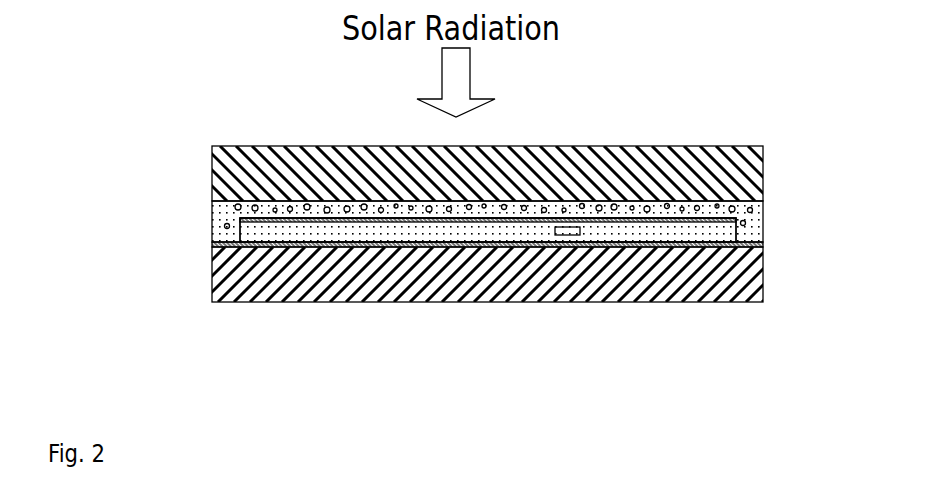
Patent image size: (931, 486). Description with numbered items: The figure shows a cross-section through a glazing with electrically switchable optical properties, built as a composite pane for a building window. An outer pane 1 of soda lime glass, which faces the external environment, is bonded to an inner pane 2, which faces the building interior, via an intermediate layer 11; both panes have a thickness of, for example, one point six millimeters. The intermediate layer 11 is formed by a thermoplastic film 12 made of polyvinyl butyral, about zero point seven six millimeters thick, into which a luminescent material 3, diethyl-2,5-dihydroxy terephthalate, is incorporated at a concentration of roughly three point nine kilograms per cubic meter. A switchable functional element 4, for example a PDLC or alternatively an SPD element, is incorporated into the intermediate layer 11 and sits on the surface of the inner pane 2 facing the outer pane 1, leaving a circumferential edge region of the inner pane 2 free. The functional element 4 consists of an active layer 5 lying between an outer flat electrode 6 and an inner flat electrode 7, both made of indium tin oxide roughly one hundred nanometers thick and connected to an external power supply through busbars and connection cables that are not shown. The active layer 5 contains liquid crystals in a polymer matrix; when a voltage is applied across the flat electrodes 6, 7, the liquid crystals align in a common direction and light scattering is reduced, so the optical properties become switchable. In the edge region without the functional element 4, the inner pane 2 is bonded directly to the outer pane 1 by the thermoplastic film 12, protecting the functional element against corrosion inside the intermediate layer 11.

The outer pane 1 is at (223, 153).
The inner pane 2 is at (223, 296).
The luminescent material 3 is at (226, 225).
The switchable functional element 4 is at (567, 296).
The active layer 5 is at (745, 230).
The outer flat electrode 6 is at (761, 218).
The inner flat electrode 7 is at (763, 243).
The intermediate layer 11 is at (202, 200).
The thermoplastic film 12 is at (762, 210).